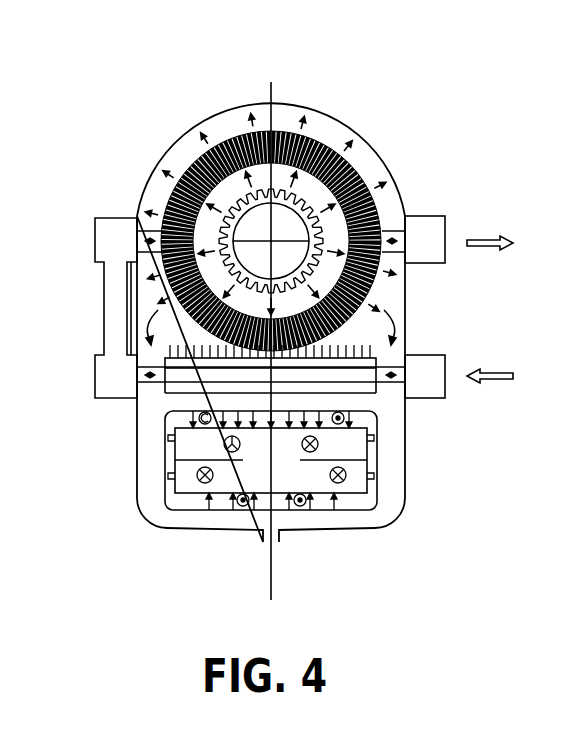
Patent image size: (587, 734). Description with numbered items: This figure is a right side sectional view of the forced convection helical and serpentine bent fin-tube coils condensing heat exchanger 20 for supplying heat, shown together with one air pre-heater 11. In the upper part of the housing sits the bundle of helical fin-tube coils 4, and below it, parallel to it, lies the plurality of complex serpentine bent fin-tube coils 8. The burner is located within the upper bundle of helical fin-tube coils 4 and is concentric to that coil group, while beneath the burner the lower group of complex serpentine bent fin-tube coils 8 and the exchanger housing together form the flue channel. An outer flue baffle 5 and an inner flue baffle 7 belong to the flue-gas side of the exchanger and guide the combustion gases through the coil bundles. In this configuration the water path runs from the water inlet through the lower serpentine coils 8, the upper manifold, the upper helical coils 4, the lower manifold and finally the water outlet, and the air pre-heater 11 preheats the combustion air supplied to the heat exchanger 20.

The heat exchanger 20 is at (371, 50).
The bundle of helical fin-tube coils 4 is at (238, 142).
The outer flue baffle 5 is at (358, 178).
The complex serpentine bent fin-tube coils 8 is at (163, 358).
The inner flue baffle 7 is at (173, 393).
The air pre-heater 11 is at (258, 457).